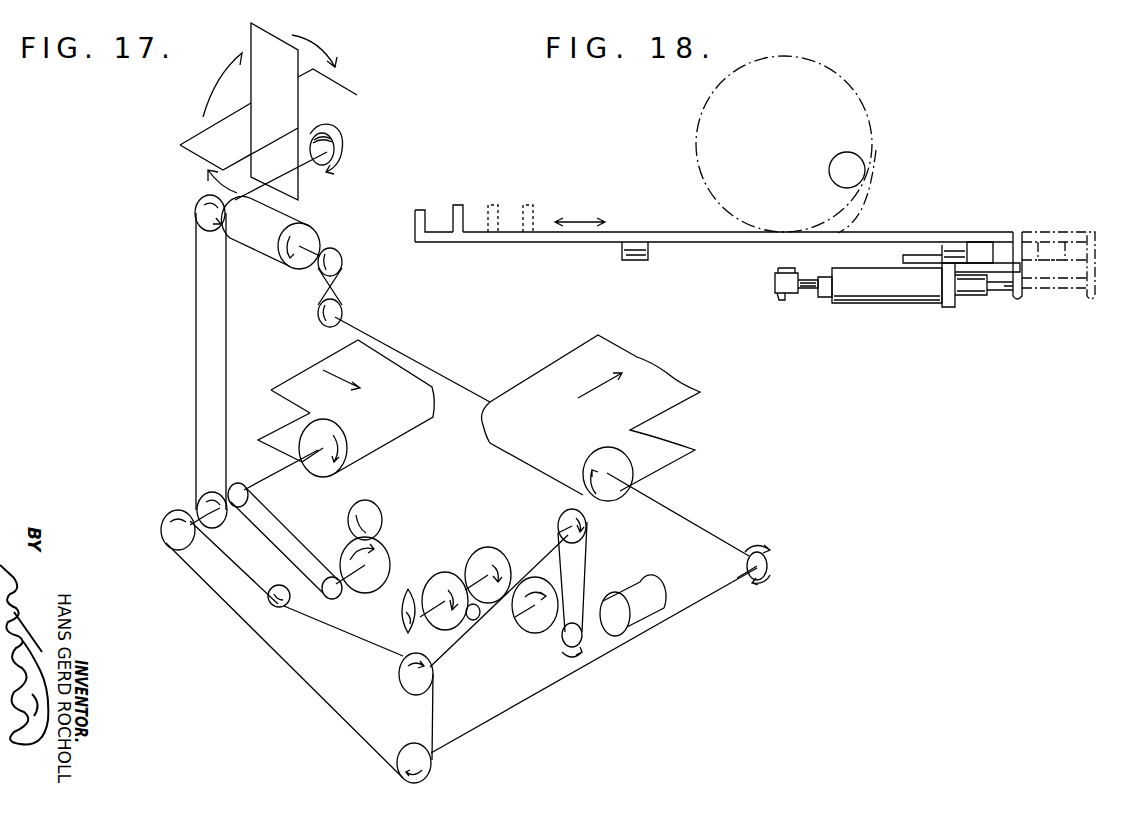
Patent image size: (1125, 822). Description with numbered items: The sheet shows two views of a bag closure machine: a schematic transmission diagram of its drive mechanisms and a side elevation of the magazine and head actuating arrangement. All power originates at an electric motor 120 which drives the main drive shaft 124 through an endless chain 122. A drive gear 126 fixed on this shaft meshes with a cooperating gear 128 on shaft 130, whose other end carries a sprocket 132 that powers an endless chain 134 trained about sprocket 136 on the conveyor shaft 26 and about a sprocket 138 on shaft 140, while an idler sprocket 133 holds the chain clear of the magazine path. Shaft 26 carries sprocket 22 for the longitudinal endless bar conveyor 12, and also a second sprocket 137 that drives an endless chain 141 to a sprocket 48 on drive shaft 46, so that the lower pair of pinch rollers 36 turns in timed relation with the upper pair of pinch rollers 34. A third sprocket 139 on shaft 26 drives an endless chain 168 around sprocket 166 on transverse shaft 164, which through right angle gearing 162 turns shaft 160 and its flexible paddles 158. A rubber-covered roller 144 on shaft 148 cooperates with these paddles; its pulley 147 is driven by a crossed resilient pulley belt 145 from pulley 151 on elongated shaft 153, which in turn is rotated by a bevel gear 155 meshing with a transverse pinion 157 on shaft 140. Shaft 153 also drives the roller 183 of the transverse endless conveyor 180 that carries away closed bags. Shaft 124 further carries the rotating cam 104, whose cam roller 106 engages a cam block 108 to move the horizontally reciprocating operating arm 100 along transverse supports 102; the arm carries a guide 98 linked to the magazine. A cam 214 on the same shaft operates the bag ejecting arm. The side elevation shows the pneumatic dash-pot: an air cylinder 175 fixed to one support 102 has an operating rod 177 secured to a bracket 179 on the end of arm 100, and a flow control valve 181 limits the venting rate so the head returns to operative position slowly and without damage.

In FIG. 17, the longitudinal endless bar conveyor 12 is at (282, 387).
In FIG. 17, the sprocket 22 is at (301, 446).
In FIG. 17, the shaft 26 is at (272, 484).
In FIG. 17, the upper pair of pinch rollers 34 is at (348, 512).
In FIG. 17, the lower pair of pinch rollers 36 is at (342, 537).
In FIG. 17, the drive shaft 46 is at (355, 588).
In FIG. 17, the sprocket 48 is at (332, 599).
In FIG. 18, the guide 98 is at (462, 210).
In FIG. 18, the operating arm 100 is at (700, 232).
In FIG. 18, the transverse supports 102 is at (622, 252).
In FIG. 17, the rotating cam 104 is at (434, 575).
In FIG. 18, the rotating cam 104 is at (700, 100).
In FIG. 17, the cam roller 106 is at (472, 613).
In FIG. 18, the cam roller 106 is at (836, 155).
In FIG. 18, the cam block 108 is at (860, 199).
In FIG. 17, the electric motor 120 is at (650, 590).
In FIG. 17, the endless chain 122 is at (588, 561).
In FIG. 17, the drive shaft 124 is at (530, 555).
In FIG. 17, the drive gear 126 is at (472, 552).
In FIG. 17, the cooperating gear 128 is at (540, 632).
In FIG. 17, the shaft 130 is at (447, 655).
In FIG. 17, the sprocket 132 is at (405, 684).
In FIG. 17, the idler sprocket 133 is at (276, 585).
In FIG. 17, the endless chain 134 is at (310, 683).
In FIG. 17, the sprocket 136 is at (162, 541).
In FIG. 17, the second sprocket 137 is at (238, 484).
In FIG. 17, the sprocket 138 is at (405, 748).
In FIG. 17, the third sprocket 139 is at (198, 508).
In FIG. 17, the shaft 140 is at (550, 689).
In FIG. 17, the endless chain 141 is at (270, 542).
In FIG. 17, the roller 144 is at (290, 225).
In FIG. 17, the resilient pulley belt 145 is at (322, 283).
In FIG. 17, the pulley 147 is at (343, 267).
In FIG. 17, the shaft 148 is at (333, 250).
In FIG. 17, the pulley 151 is at (343, 311).
In FIG. 17, the elongated shaft 153 is at (382, 343).
In FIG. 17, the bevel gear 155 is at (775, 555).
In FIG. 17, the transverse pinion 157 is at (772, 580).
In FIG. 17, the flexible paddles 158 is at (181, 160).
In FIG. 17, the shaft 160 is at (303, 143).
In FIG. 17, the right angle gearing 162 is at (350, 150).
In FIG. 17, the transverse shaft 164 is at (306, 168).
In FIG. 17, the sprocket 166 is at (196, 214).
In FIG. 17, the endless chain 168 is at (196, 260).
In FIG. 18, the air cylinder 175 is at (856, 272).
In FIG. 18, the operating rod 177 is at (1000, 286).
In FIG. 18, the bracket 179 is at (1018, 232).
In FIG. 17, the transverse endless conveyor 180 is at (690, 384).
In FIG. 18, the flow control valve 181 is at (775, 286).
In FIG. 17, the roller 183 is at (623, 462).
In FIG. 17, the cam 214 is at (408, 630).